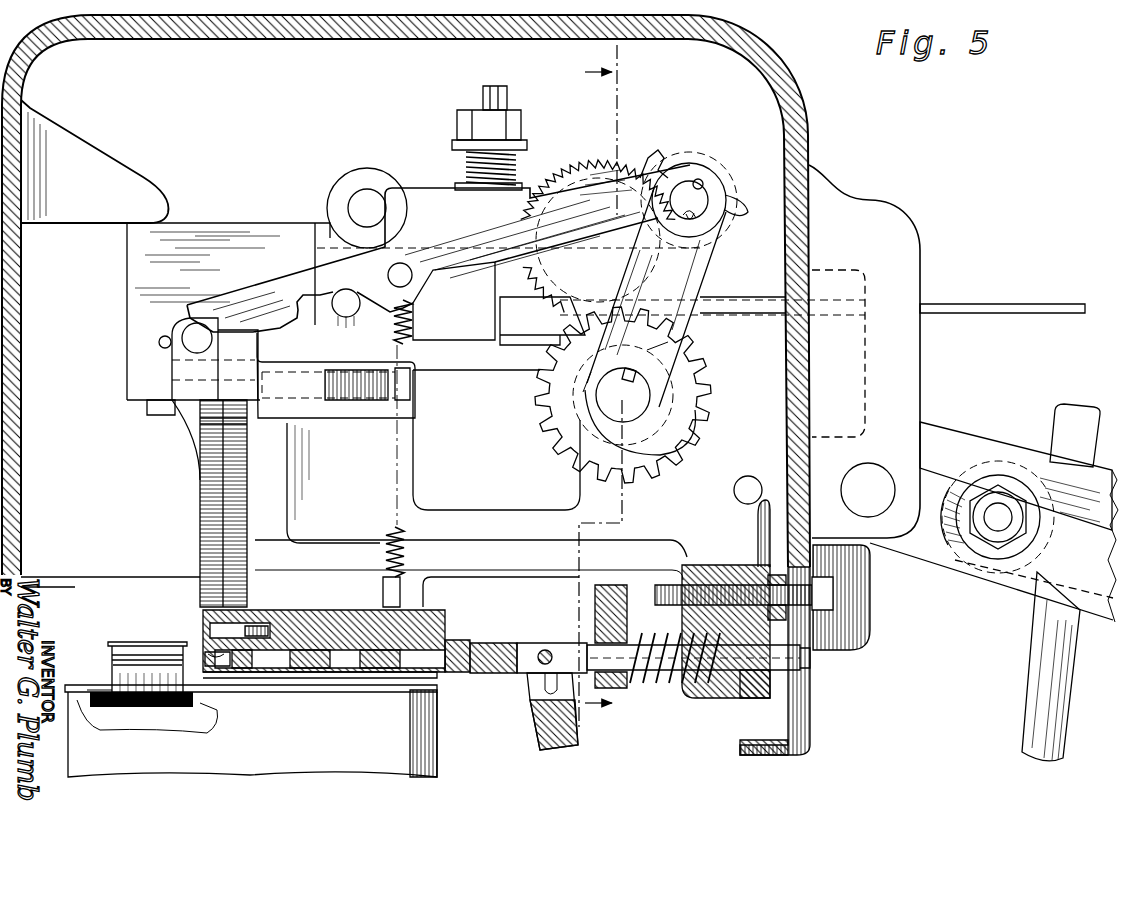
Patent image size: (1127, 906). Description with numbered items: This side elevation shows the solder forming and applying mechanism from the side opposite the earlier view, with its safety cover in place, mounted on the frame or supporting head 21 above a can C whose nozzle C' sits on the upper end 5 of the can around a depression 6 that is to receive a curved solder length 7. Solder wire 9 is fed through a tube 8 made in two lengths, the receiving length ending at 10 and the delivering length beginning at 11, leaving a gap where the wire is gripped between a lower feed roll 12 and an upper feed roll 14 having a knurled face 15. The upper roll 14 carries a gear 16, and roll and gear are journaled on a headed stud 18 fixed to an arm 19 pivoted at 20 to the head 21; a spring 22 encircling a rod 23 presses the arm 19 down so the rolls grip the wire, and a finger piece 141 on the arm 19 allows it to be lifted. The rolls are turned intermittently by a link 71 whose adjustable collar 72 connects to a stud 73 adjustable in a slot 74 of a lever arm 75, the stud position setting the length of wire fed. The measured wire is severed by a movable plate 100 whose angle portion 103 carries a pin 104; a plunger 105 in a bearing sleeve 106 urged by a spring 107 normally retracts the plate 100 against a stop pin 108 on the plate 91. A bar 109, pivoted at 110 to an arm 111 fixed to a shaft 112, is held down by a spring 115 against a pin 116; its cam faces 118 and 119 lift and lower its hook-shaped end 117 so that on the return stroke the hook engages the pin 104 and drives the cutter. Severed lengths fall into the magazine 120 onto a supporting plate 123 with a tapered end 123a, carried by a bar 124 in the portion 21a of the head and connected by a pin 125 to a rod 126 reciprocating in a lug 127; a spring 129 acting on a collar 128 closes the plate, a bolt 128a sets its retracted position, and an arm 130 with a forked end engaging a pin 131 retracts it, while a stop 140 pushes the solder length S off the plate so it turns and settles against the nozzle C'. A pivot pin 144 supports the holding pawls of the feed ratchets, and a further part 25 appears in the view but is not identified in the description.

The upper end of the can 5 is at (88, 700).
The depression 6 is at (100, 701).
The solder length 7 is at (600, 389).
The tube 8 is at (738, 298).
The solder wire 9 is at (985, 304).
The end of receiving length of tube 10 is at (703, 310).
The beginning of delivering length of tube 11 is at (585, 355).
The lower feed roll 12 is at (712, 402).
The upper feed roll 14 is at (580, 178).
The knurled face 15 is at (602, 160).
The gear 16 is at (652, 160).
The headed stud 18 is at (590, 237).
The arm 19 is at (508, 195).
The pivot 20 is at (367, 198).
The frame or supporting head 21 is at (472, 515).
The portion of head 21a is at (420, 598).
The spring 22 is at (466, 158).
The rod 23 is at (490, 86).
The bracket 25 is at (805, 724).
The link 71 is at (1040, 688).
The adjustable collar 72 is at (1042, 548).
The stud 73 is at (998, 503).
The slot 74 is at (930, 490).
The lever arm 75 is at (975, 575).
The plate 91 is at (242, 226).
The movable plate 100 is at (137, 388).
The angle portion 103 is at (180, 350).
The pin 104 is at (190, 335).
The plunger 105 is at (235, 385).
The bearing sleeve 106 is at (305, 400).
The spring 107 is at (350, 402).
The stop pin 108 is at (158, 342).
The bar 109 is at (282, 290).
The pivot 110 is at (697, 198).
The arm 111 is at (665, 358).
The shaft 112 is at (607, 396).
The spring 115 is at (415, 320).
The pin 116 is at (345, 298).
The hook-shaped end 117 is at (297, 315).
The cam face 118 is at (372, 292).
The cam face 119 is at (432, 292).
The guide chute or magazine 120 is at (210, 500).
The supporting plate 123 is at (260, 670).
The tapered delivery end 123a is at (208, 652).
The bar 124 is at (372, 672).
The pin 125 is at (470, 672).
The rod 126 is at (492, 645).
The lug 127 is at (735, 700).
The collar 128 is at (626, 690).
The bolt 128a is at (838, 598).
The spring 129 is at (660, 678).
The arm 130 is at (545, 722).
The pin 131 is at (545, 650).
The stop 140 is at (244, 670).
The finger piece 141 is at (735, 200).
The supporting pivot pin 144 is at (868, 490).
The can C is at (240, 731).
The nozzle C' is at (147, 654).
The solder length S is at (222, 672).